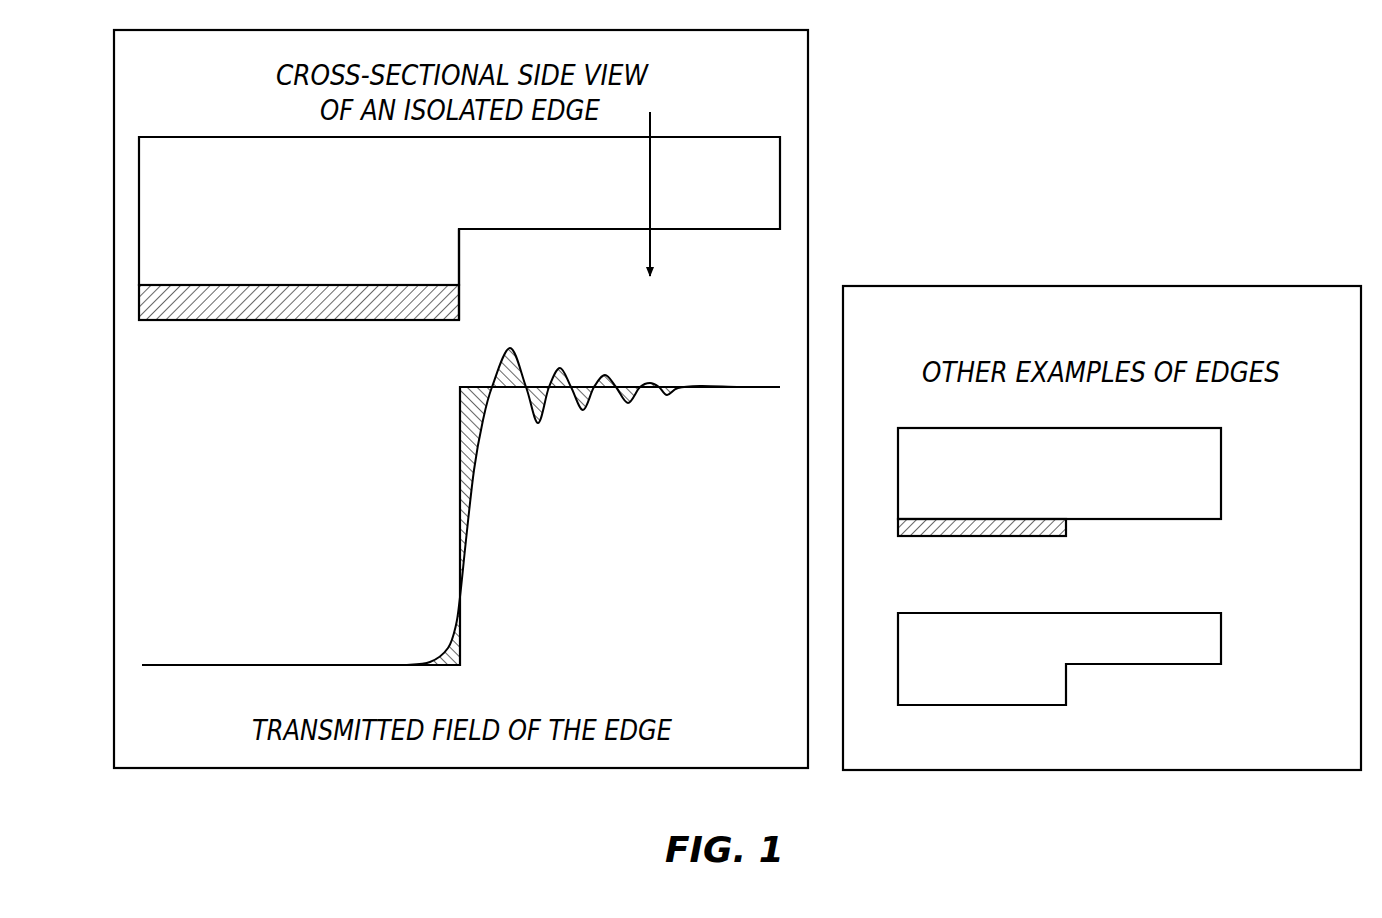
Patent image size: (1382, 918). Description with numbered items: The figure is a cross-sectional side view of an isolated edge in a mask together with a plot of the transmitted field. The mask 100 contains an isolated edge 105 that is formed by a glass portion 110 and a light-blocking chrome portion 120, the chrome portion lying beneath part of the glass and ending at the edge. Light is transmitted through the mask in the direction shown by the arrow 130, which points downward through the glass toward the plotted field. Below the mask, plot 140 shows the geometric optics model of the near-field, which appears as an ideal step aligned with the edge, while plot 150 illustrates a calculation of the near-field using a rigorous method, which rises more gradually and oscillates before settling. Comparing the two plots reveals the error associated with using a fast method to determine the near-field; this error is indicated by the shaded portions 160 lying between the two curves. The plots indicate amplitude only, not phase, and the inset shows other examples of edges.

The mask 100 is at (472, 218).
The isolated edge 105 is at (455, 326).
The glass portion 110 is at (139, 222).
The light-blocking chrome portion 120 is at (139, 299).
The arrow 130 is at (653, 247).
The plot of geometric optics model 140 is at (460, 503).
The plot of rigorous near-field calculation 150 is at (478, 488).
The shaded portions 160 is at (460, 447).